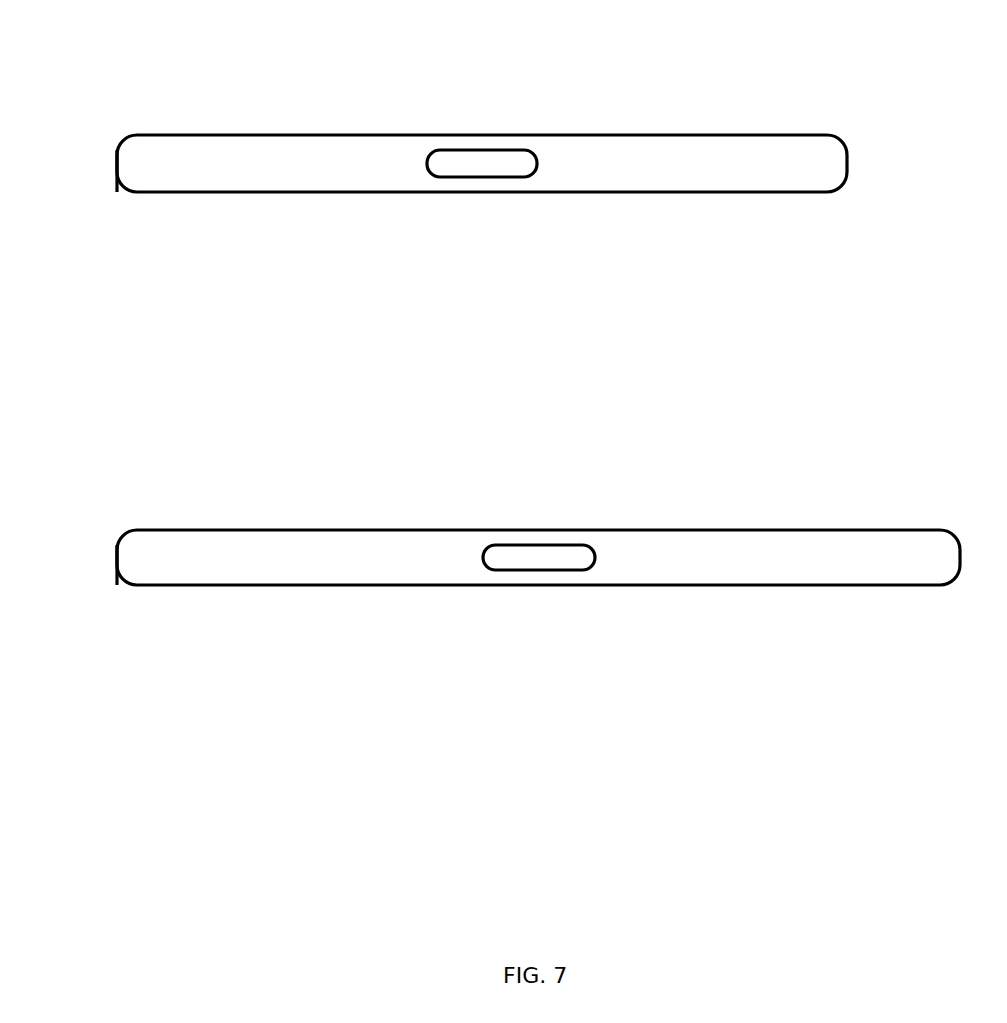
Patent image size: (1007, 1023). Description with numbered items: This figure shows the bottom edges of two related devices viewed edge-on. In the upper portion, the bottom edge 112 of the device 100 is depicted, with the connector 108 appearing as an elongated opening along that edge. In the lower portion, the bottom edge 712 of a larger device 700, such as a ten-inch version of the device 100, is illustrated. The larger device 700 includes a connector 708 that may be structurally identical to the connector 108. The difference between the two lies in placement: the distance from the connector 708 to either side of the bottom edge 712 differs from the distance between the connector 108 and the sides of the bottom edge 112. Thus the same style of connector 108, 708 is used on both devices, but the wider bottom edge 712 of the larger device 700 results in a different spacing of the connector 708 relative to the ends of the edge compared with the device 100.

The device 100 is at (662, 133).
The connector 108 is at (482, 150).
The bottom edge 112 is at (130, 171).
The larger device 700 is at (797, 528).
The connector 708 is at (520, 545).
The bottom edge 712 is at (130, 573).